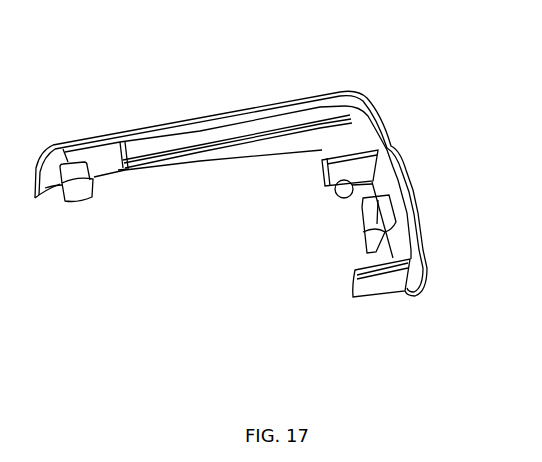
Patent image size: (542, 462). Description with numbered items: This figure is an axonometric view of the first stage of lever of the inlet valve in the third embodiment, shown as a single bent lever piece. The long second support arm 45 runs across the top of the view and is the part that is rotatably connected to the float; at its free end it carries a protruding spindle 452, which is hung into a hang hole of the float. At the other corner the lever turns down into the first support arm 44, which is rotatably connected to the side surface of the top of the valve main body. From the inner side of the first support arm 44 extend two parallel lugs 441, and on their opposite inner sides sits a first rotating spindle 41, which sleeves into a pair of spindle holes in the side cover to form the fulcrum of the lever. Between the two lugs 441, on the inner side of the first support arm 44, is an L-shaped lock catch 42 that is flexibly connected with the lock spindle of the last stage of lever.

The second support arm 45 is at (213, 118).
The first support arm 44 is at (395, 170).
The protruding spindle 452 is at (80, 201).
The lugs 441 is at (355, 288).
The first rotating spindle 41 is at (343, 195).
The lock catch 42 is at (368, 228).